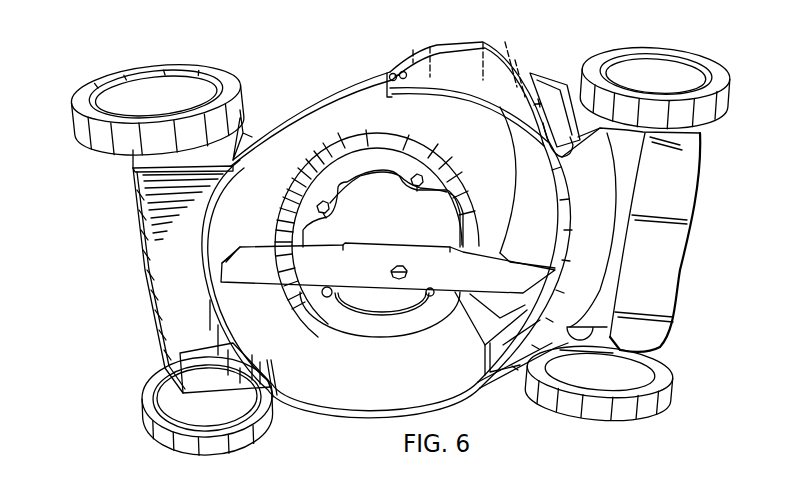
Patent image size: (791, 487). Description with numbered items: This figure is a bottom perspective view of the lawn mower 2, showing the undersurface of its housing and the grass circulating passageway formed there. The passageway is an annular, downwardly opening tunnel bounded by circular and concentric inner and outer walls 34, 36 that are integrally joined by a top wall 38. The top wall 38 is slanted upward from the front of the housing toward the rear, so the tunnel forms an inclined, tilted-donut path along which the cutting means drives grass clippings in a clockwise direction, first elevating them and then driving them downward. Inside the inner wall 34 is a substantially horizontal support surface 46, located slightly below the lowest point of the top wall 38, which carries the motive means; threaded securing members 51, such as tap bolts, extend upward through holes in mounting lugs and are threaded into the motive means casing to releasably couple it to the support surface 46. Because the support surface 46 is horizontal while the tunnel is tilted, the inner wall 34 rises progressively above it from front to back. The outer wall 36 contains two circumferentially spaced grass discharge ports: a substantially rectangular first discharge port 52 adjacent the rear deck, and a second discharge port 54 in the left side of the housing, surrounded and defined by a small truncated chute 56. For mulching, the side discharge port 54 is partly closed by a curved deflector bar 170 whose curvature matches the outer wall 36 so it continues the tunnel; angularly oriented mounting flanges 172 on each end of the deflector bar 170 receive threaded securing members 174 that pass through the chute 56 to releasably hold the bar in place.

The lawn mower 2 is at (276, 99).
The inner wall 34 is at (309, 166).
The outer wall 36 is at (210, 216).
The top wall 38 is at (272, 191).
The support surface 46 is at (357, 162).
The threaded securing member 51 is at (328, 213).
The first discharge port 52 is at (543, 172).
The second discharge port 54 is at (462, 78).
The truncated chute 56 is at (506, 54).
The deflector bar 170 is at (447, 90).
The mounting flange 172 is at (393, 73).
The threaded securing member 174 is at (411, 72).